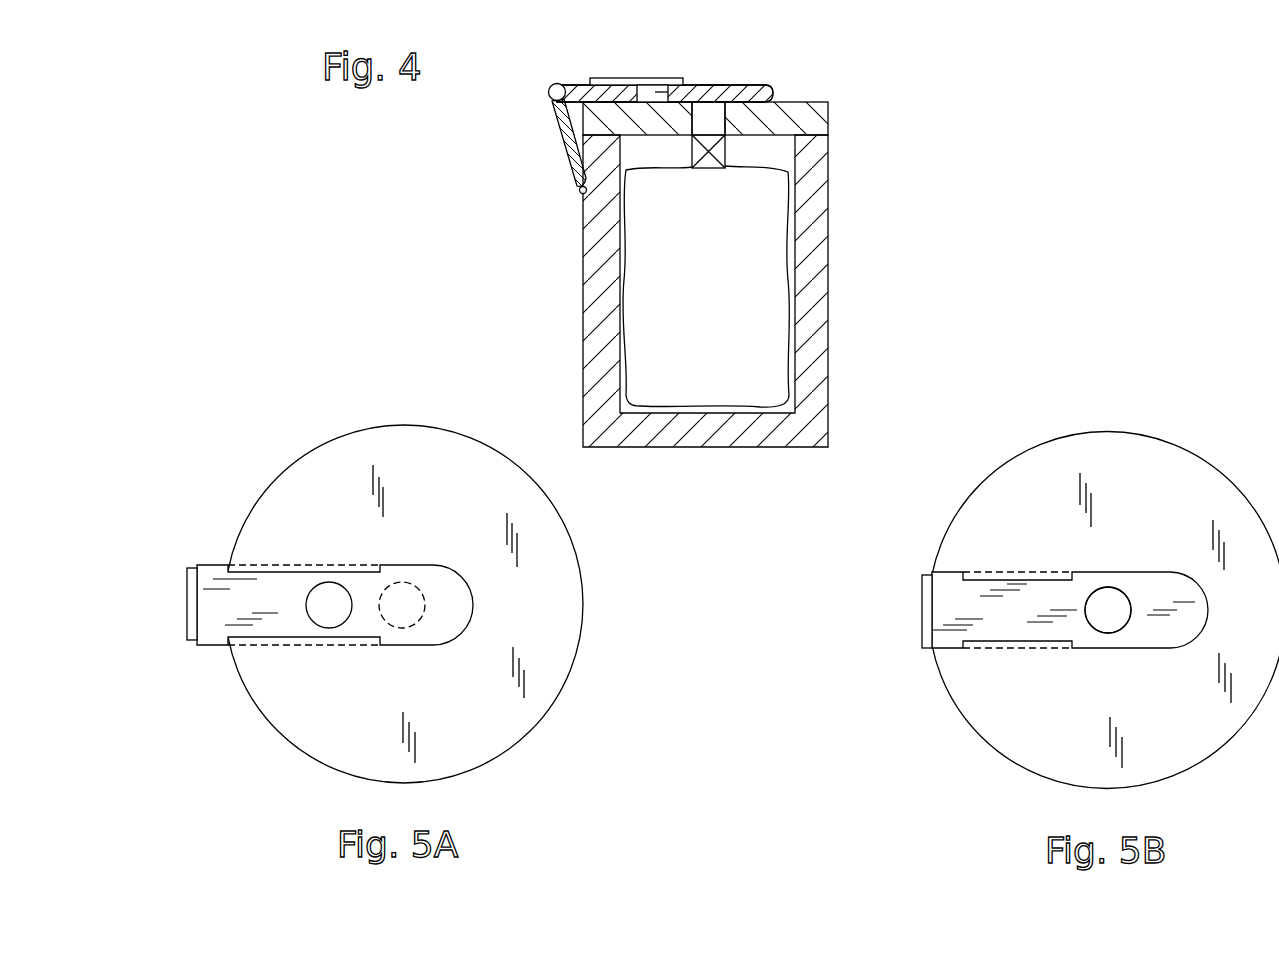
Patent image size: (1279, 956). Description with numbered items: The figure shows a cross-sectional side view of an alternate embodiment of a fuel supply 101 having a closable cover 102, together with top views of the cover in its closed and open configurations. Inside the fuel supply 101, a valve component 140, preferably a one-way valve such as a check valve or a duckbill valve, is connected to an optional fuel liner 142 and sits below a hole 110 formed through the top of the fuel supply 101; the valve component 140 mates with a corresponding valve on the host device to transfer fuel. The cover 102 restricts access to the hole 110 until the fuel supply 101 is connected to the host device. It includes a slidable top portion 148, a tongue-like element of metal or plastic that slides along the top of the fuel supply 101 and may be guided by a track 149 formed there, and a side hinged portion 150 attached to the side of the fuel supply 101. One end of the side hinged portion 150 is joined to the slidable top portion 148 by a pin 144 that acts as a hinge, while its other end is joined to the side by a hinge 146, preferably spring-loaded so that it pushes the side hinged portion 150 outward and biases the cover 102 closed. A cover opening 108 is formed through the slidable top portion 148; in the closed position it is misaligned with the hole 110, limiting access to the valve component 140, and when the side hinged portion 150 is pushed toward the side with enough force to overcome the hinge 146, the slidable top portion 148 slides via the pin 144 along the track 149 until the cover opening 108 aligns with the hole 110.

In FIG. 4, the fuel supply 101 is at (828, 290).
In FIG. 5A, the fuel supply 101 is at (337, 457).
In FIG. 5B, the fuel supply 101 is at (1043, 462).
In FIG. 4, the cover 102 is at (568, 82).
In FIG. 4, the cover opening 108 is at (712, 85).
In FIG. 5A, the cover opening 108 is at (328, 600).
In FIG. 5B, the cover opening 108 is at (1108, 615).
In FIG. 4, the hole 110 is at (705, 122).
In FIG. 5A, the hole 110 is at (401, 612).
In FIG. 5B, the hole 110 is at (1108, 610).
In FIG. 4, the valve component 140 is at (727, 149).
In FIG. 4, the fuel liner 142 is at (765, 212).
In FIG. 4, the pin 144 is at (549, 96).
In FIG. 5A, the pin 144 is at (194, 566).
In FIG. 5B, the pin 144 is at (925, 575).
In FIG. 4, the hinge 146 is at (579, 191).
In FIG. 4, the slidable top portion 148 is at (773, 92).
In FIG. 5A, the slidable top portion 148 is at (212, 632).
In FIG. 5B, the slidable top portion 148 is at (950, 640).
In FIG. 4, the track 149 is at (594, 78).
In FIG. 5A, the track 149 is at (260, 562).
In FIG. 5B, the track 149 is at (967, 570).
In FIG. 4, the side hinged portion 150 is at (563, 123).